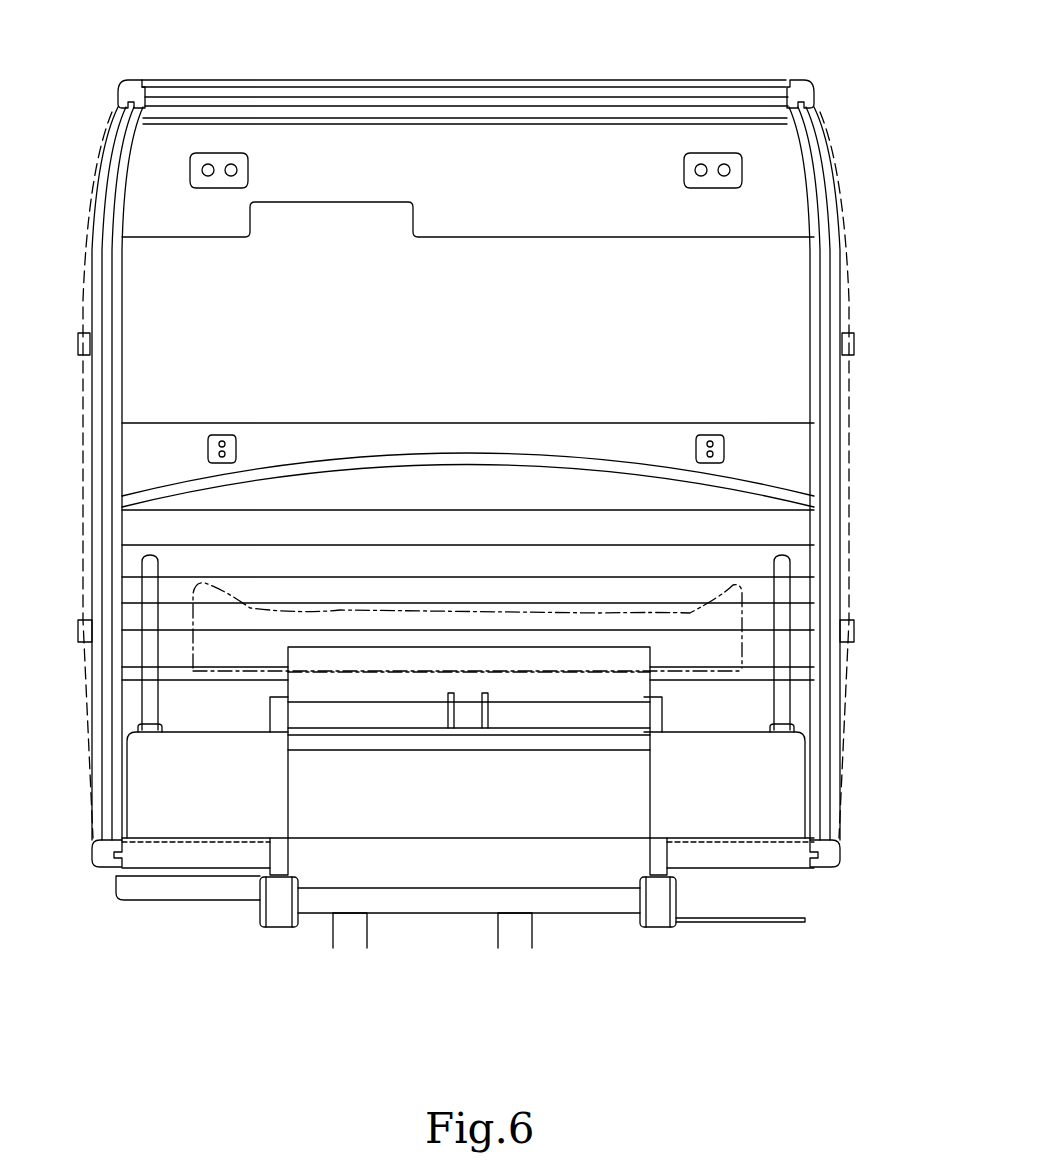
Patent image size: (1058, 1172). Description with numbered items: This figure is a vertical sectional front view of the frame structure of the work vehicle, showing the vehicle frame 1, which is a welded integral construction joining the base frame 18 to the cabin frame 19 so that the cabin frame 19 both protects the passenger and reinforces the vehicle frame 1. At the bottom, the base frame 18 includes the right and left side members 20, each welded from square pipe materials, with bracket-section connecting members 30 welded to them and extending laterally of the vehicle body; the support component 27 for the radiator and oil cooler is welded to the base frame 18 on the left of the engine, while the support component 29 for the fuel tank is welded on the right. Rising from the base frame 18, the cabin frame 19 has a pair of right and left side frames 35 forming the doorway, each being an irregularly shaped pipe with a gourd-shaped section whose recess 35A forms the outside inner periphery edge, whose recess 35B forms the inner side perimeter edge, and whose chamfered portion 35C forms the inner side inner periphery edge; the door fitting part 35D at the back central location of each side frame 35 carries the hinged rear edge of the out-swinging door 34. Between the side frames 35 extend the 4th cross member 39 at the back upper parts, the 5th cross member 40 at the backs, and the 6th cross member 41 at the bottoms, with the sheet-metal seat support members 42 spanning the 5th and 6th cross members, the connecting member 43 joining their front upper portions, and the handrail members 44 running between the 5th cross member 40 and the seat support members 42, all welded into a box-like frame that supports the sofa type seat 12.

The vehicle frame 1 is at (262, 972).
The seat 12 is at (456, 610).
The base frame 18 is at (662, 938).
The cabin frame 19 is at (121, 70).
The side member 20 is at (288, 857).
The support component 27 is at (762, 925).
The support component 29 is at (150, 905).
The connecting member 30 is at (222, 866).
The door 34 is at (80, 262).
The side frame 35 is at (98, 866).
The recess 35A is at (118, 100).
The recess 35B is at (140, 80).
The chamfered portion 35C is at (144, 108).
The door fitting part 35D is at (122, 406).
The 4th cross member 39 is at (500, 232).
The 5th cross member 40 is at (421, 422).
The 6th cross member 41 is at (480, 838).
The seat support member 42 is at (226, 730).
The connecting member 43 is at (399, 751).
The handrail member 44 is at (160, 560).